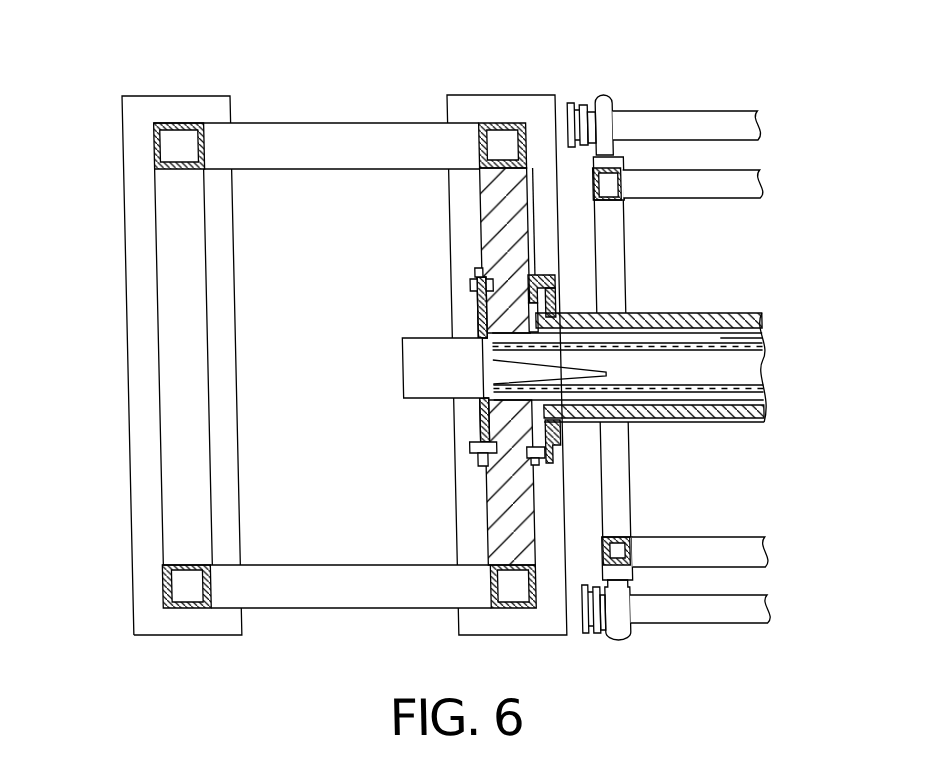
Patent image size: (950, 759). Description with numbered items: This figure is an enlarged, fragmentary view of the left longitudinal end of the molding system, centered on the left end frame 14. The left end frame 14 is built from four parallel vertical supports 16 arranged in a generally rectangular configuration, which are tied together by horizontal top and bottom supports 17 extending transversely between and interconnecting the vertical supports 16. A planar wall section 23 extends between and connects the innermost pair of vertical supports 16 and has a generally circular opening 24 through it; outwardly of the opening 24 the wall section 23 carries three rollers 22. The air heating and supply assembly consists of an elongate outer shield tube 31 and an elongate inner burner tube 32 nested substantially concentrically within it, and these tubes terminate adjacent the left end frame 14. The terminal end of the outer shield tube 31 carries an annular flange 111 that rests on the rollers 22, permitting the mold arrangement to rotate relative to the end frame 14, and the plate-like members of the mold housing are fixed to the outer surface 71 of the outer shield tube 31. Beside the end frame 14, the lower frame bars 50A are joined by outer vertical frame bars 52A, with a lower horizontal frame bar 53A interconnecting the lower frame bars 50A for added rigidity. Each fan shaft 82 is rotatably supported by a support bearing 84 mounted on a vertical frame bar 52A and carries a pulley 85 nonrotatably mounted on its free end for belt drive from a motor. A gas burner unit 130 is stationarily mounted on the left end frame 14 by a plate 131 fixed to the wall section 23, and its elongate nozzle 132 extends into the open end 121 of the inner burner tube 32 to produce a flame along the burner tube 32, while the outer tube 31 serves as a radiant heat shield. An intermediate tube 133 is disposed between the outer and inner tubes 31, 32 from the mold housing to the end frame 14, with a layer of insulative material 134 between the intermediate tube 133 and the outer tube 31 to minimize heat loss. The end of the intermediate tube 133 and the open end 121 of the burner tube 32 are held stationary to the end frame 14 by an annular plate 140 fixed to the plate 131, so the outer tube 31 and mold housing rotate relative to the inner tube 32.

The left end frame 14 is at (274, 54).
The vertical supports 16 is at (152, 150).
The horizontal supports 17 is at (310, 142).
The rollers 22 is at (548, 262).
The planar wall section 23 is at (498, 205).
The circular opening 24 is at (468, 292).
The outer shield tube 31 is at (707, 313).
The inner burner tube 32 is at (728, 421).
The lower frame bars 50A is at (736, 188).
The outer vertical frame bars 52A is at (620, 178).
The lower horizontal frame bar 53A is at (607, 223).
The outer surface 71 is at (743, 309).
The shaft 82 is at (746, 128).
The support bearings 84 is at (604, 95).
The pulley 85 is at (571, 103).
The annular flange 111 is at (549, 290).
The open end 121 is at (473, 316).
The gas burner unit 130 is at (386, 360).
The plate 131 is at (462, 446).
The nozzle 132 is at (579, 362).
The intermediate tube 133 is at (755, 339).
The insulative material 134 is at (694, 421).
The annular plate 140 is at (470, 415).